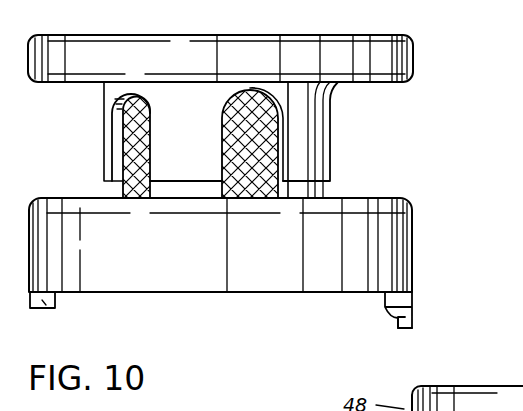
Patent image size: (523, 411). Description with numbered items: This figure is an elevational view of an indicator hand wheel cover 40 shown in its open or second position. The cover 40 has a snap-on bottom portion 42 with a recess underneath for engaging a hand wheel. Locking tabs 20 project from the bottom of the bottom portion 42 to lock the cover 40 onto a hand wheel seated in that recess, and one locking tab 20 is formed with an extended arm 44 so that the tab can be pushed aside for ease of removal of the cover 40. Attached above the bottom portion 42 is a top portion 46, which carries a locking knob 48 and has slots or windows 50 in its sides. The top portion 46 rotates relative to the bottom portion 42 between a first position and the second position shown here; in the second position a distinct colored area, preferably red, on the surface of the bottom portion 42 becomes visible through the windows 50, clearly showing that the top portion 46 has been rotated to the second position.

The indicator hand wheel cover 40 is at (250, 171).
The locking knob 48 is at (388, 58).
The slots or windows 50 is at (122, 143).
The top portion 46 is at (316, 138).
The snap-on bottom portion 42 is at (183, 268).
The locking tabs 20 is at (45, 305).
The extended arm 44 is at (400, 322).